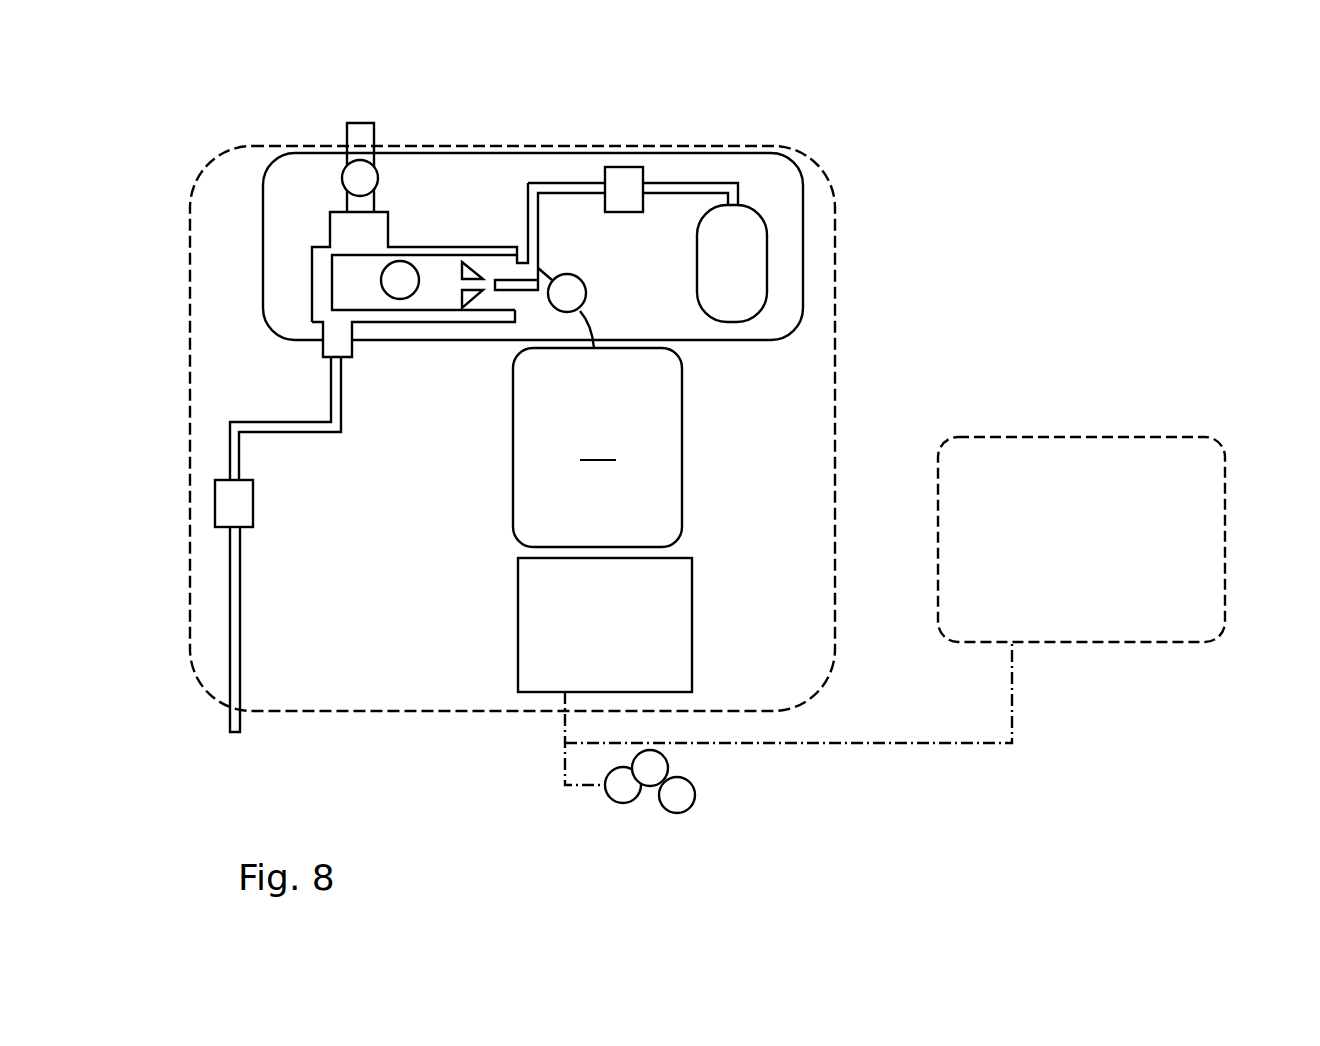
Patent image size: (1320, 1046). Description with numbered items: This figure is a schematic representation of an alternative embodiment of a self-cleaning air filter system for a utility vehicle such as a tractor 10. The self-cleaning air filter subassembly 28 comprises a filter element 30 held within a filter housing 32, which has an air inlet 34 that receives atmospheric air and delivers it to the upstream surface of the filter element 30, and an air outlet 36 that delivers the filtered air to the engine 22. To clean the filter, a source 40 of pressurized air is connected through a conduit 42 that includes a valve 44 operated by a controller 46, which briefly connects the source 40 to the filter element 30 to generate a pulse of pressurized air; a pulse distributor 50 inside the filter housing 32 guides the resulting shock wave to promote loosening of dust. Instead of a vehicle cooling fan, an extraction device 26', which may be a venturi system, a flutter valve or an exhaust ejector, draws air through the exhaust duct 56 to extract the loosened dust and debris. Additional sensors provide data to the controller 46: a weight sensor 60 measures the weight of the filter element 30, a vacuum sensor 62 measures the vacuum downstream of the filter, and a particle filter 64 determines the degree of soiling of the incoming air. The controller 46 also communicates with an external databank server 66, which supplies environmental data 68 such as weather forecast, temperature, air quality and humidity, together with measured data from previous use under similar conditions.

The tractor 10 is at (190, 357).
The engine 22 is at (597, 447).
The extraction device 26' is at (220, 442).
The self-cleaning air filter subassembly 28 is at (800, 180).
The filter element 30 is at (350, 283).
The filter housing 32 is at (492, 247).
The air inlet 34 is at (364, 123).
The air outlet 36 is at (560, 323).
The source 40 is at (748, 268).
The conduit 42 is at (678, 184).
The valve 44 is at (625, 176).
The controller 46 is at (545, 676).
The pulse distributor 50 is at (460, 265).
The exhaust duct 56 is at (228, 717).
The weight sensor 60 is at (382, 268).
The vacuum sensor 62 is at (590, 282).
The particle filter 64 is at (343, 165).
The databank server 66 is at (1226, 540).
The environmental data 68 is at (696, 797).